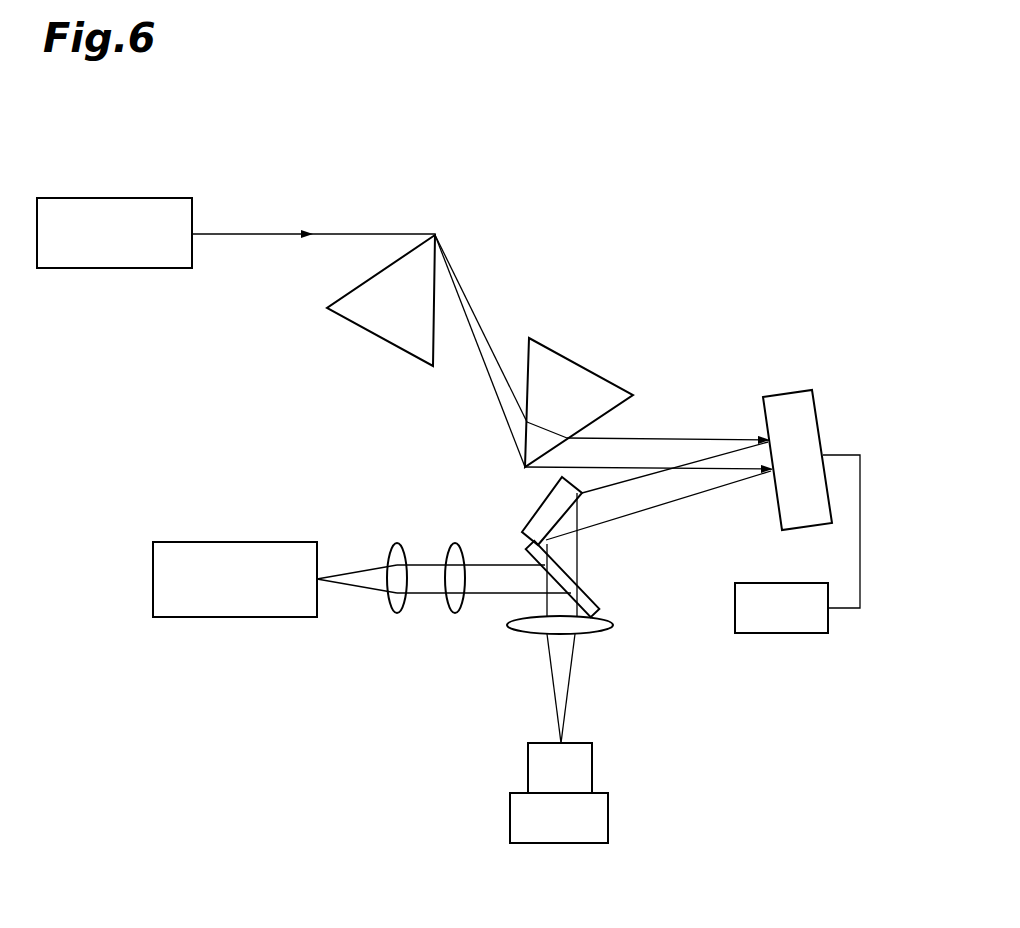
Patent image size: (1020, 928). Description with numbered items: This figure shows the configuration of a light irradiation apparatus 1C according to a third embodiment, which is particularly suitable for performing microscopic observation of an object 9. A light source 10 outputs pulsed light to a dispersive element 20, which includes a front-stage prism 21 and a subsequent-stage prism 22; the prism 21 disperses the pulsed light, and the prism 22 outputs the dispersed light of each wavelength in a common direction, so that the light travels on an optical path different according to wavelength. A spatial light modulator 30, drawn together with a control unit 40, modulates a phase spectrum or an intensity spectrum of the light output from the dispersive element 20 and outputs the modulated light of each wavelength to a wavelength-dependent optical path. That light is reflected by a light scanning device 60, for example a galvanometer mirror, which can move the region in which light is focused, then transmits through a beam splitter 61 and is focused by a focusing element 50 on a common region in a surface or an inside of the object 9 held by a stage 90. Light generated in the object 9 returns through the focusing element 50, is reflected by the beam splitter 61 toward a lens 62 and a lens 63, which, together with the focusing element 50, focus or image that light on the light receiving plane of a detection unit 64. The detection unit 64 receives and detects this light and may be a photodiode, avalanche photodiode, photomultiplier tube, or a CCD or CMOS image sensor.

The light irradiation apparatus 1C is at (547, 180).
The light source 10 is at (115, 197).
The dispersive element 20 is at (552, 220).
The prism 21 is at (433, 307).
The prism 22 is at (593, 367).
The spatial light modulator 30 is at (787, 393).
The control unit 40 is at (781, 636).
The focusing element 50 is at (605, 634).
The light scanning device 60 is at (533, 512).
The beam splitter 61 is at (597, 594).
The lens 62 is at (455, 614).
The lens 63 is at (397, 614).
The detection unit 64 is at (236, 618).
The object 9 is at (593, 765).
The stage 90 is at (609, 817).